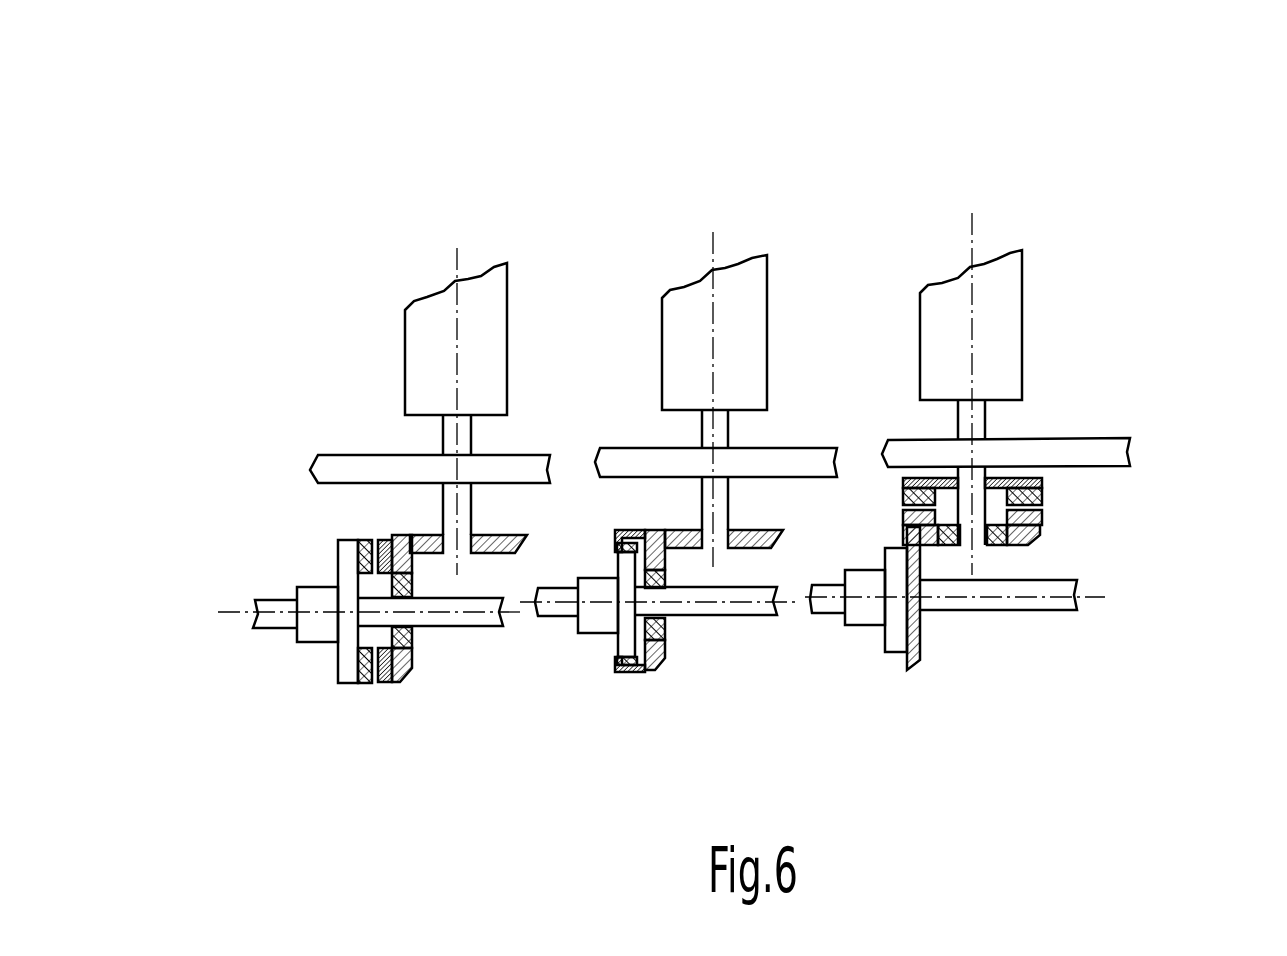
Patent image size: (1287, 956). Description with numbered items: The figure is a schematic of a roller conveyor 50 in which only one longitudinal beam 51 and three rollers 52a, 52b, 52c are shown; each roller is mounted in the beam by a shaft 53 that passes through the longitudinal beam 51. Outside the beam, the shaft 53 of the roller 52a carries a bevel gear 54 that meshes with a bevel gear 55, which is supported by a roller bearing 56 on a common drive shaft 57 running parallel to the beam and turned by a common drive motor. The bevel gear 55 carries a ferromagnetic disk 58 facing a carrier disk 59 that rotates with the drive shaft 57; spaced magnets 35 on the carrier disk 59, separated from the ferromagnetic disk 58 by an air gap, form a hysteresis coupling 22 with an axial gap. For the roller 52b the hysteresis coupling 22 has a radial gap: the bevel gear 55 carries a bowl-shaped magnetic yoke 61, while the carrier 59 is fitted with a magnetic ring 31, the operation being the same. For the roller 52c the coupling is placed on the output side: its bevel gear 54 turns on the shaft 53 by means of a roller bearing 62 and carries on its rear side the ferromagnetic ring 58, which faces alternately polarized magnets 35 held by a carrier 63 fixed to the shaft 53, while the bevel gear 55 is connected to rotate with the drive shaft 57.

The roller conveyor 50 is at (1057, 130).
The hysteresis coupling 22 is at (353, 737).
The magnetic ring 31 is at (616, 540).
The magnets 35 is at (362, 540).
The longitudinal beam 51 is at (1090, 448).
The roller 52a is at (543, 272).
The roller 52b is at (783, 255).
The roller 52c is at (1032, 238).
The shaft 53 is at (462, 432).
The bevel gear 54 is at (497, 535).
The bevel gear 55 is at (400, 672).
The roller bearing 56 is at (413, 637).
The drive shaft 57 is at (263, 607).
The ferromagnetic disk 58 is at (385, 683).
The carrier disk 59 is at (353, 667).
The magnetic yoke 61 is at (636, 678).
The roller bearing 62 is at (1028, 538).
The carrier 63 is at (930, 485).